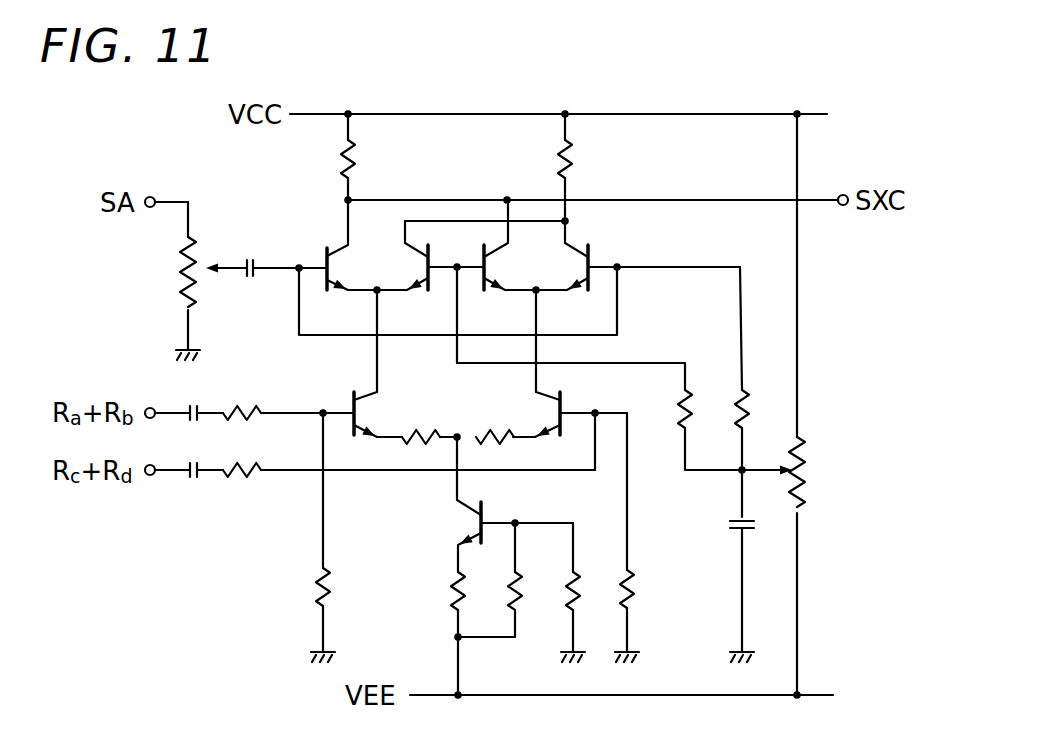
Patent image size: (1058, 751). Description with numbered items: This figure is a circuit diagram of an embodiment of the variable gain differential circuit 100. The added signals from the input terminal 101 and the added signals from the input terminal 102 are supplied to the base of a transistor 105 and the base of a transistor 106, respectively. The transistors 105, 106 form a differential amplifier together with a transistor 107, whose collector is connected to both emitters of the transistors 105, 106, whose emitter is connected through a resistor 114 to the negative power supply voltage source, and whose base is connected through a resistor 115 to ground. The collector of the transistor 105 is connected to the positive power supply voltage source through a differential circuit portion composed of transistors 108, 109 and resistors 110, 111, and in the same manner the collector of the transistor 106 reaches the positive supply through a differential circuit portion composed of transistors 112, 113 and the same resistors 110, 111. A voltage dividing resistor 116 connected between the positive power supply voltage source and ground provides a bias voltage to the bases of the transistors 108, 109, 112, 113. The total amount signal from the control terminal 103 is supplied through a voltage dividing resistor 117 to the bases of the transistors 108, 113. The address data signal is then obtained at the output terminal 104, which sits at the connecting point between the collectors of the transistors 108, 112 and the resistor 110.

The variable gain differential circuit 100 is at (536, 98).
The input terminal 101 is at (150, 407).
The input terminal 102 is at (150, 476).
The control terminal 103 is at (153, 197).
The output terminal 104 is at (842, 195).
The transistor 105 is at (350, 408).
The transistor 106 is at (565, 406).
The transistor 107 is at (485, 515).
The transistor 108 is at (323, 262).
The transistor 109 is at (433, 274).
The resistor 110 is at (362, 162).
The resistor 111 is at (578, 162).
The transistor 112 is at (480, 275).
The transistor 113 is at (592, 262).
The resistor 114 is at (450, 588).
The resistor 115 is at (561, 598).
The voltage dividing resistor 116 is at (808, 466).
The voltage dividing resistor 117 is at (178, 268).